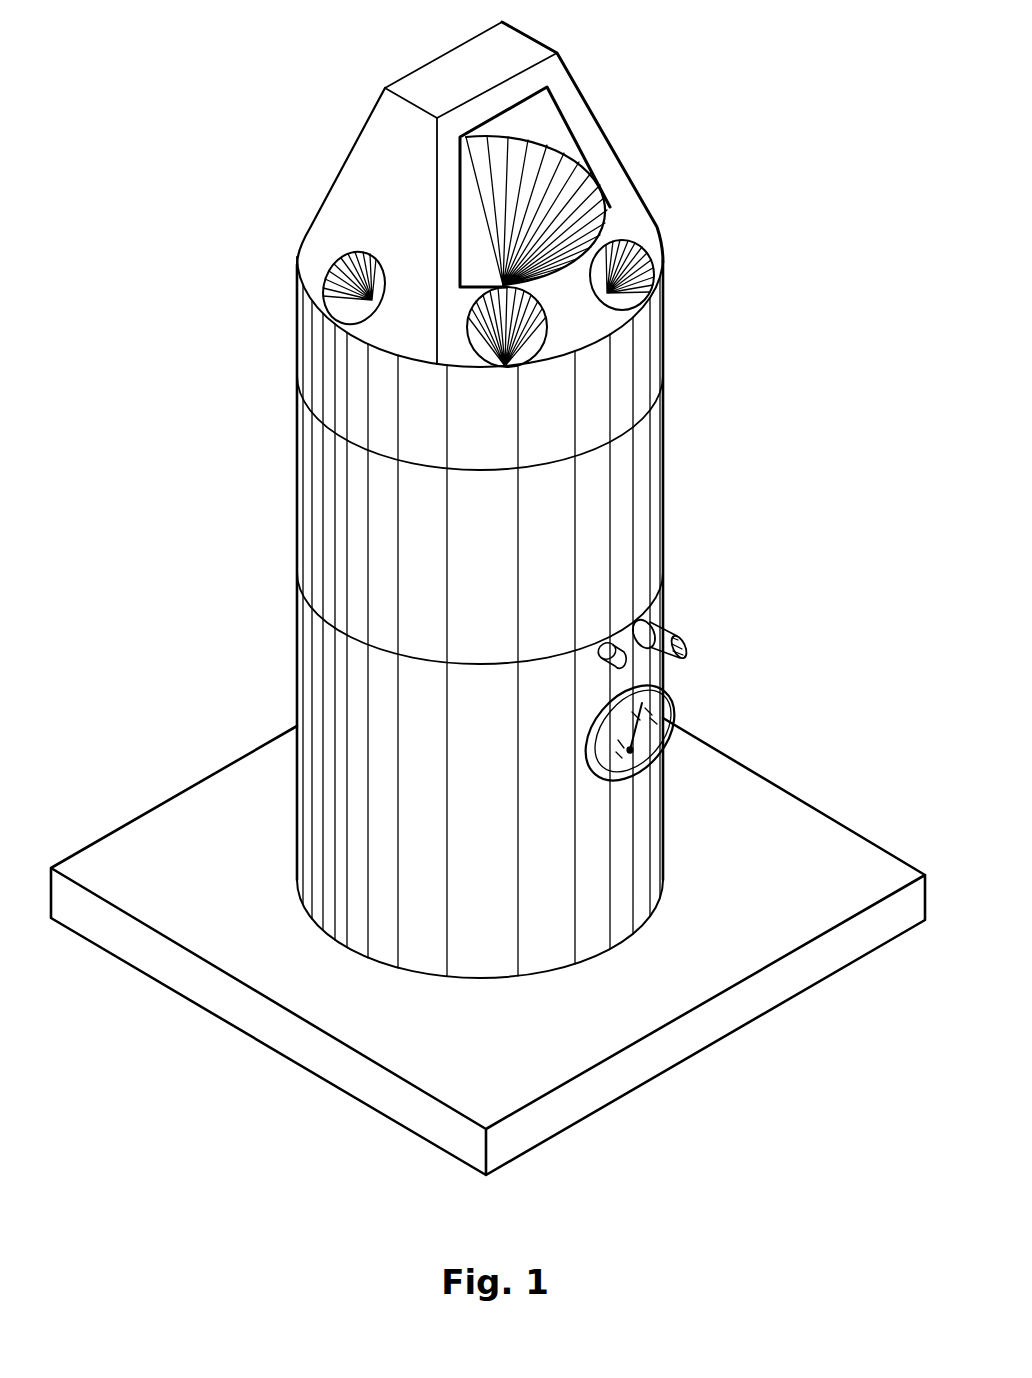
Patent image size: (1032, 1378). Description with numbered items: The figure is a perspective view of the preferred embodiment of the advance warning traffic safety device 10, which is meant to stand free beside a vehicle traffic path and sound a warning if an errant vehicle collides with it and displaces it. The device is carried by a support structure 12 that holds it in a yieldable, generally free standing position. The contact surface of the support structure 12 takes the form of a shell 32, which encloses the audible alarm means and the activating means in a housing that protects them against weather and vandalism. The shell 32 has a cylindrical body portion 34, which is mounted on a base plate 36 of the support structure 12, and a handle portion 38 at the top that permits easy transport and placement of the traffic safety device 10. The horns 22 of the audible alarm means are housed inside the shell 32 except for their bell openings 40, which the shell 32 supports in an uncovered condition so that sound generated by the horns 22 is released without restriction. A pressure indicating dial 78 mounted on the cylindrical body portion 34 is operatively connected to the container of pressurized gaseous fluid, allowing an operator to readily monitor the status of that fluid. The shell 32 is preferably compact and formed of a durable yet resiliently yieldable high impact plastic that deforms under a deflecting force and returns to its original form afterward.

The traffic safety device 10 is at (677, 475).
The support structure 12 is at (285, 660).
The horn 22 is at (597, 193).
The shell 32 is at (380, 170).
The cylindrical body portion 34 is at (297, 503).
The base plate 36 is at (647, 1053).
The handle portion 38 is at (525, 52).
The bell opening 40 is at (640, 266).
The pressure indicating dial 78 is at (667, 720).